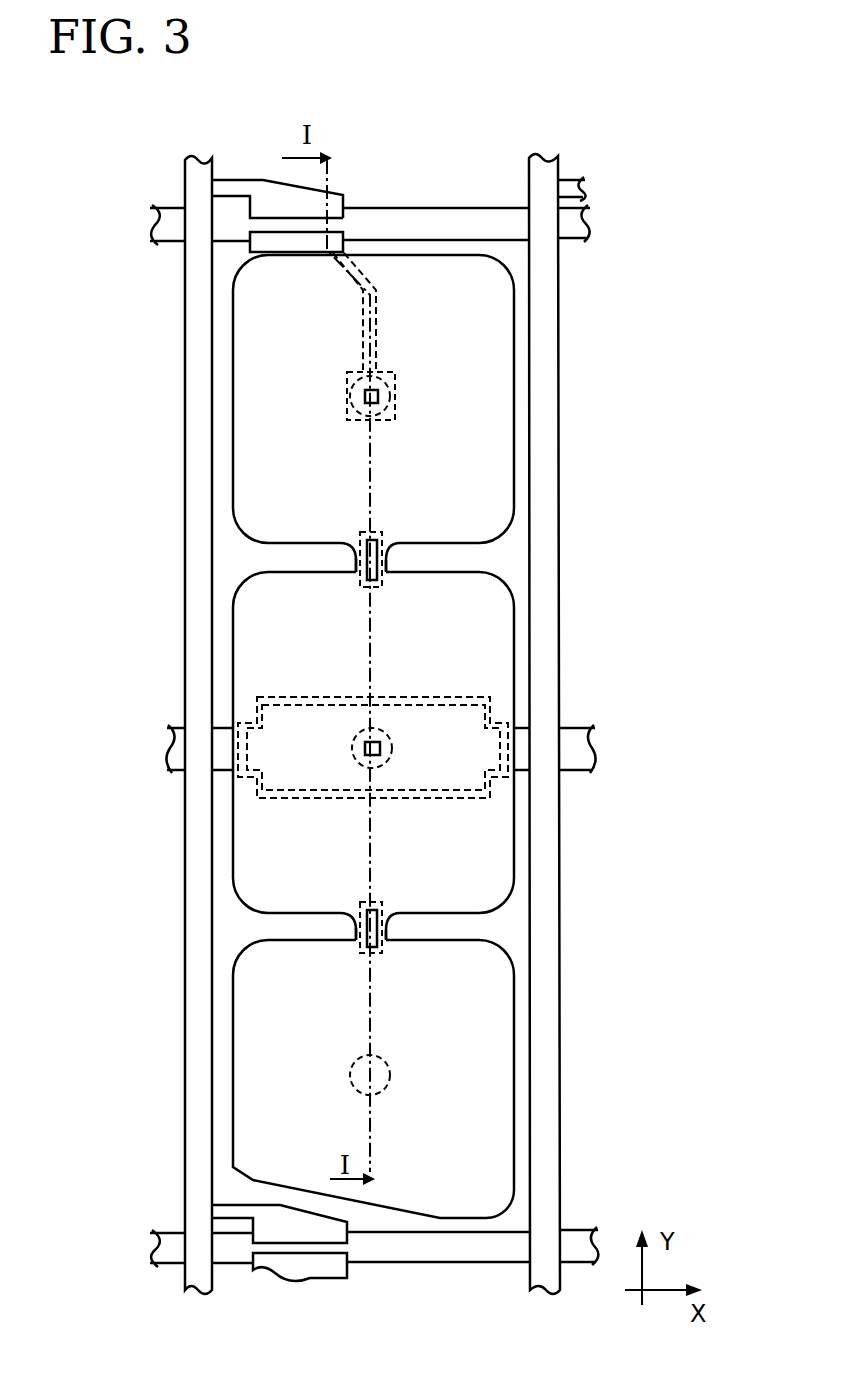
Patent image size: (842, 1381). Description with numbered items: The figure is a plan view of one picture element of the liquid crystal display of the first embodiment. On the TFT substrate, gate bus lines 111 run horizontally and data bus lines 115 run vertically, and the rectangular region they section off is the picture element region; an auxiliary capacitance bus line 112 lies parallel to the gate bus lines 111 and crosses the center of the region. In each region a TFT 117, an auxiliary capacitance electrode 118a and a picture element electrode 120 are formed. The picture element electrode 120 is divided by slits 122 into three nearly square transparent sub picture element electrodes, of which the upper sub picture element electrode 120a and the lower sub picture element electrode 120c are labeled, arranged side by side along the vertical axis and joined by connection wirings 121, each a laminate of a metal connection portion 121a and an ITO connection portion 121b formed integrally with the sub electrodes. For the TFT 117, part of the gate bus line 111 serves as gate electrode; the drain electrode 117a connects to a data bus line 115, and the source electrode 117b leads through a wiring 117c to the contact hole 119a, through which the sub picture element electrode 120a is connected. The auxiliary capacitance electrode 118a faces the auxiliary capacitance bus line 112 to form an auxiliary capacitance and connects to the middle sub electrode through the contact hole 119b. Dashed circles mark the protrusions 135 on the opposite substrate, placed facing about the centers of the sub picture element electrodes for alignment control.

The gate bus line 111 is at (165, 213).
The auxiliary capacitance bus line 112 is at (177, 757).
The data bus line 115 is at (205, 158).
The TFT 117 is at (349, 244).
The drain electrode 117a is at (267, 202).
The source electrode 117b is at (300, 244).
The wiring 117c is at (377, 318).
The auxiliary capacitance electrode 118a is at (427, 800).
The contact hole 119a is at (365, 393).
The contact hole 119b is at (362, 742).
The picture element electrode 120 is at (498, 625).
The sub picture element electrode 120a is at (240, 370).
The sub picture element electrode 120c is at (245, 1003).
The connection wiring 121 is at (352, 557).
The metal connection portion 121a is at (387, 577).
The ITO connection portion 121b is at (392, 558).
The slit 122 is at (287, 558).
The protrusion 135 is at (392, 410).